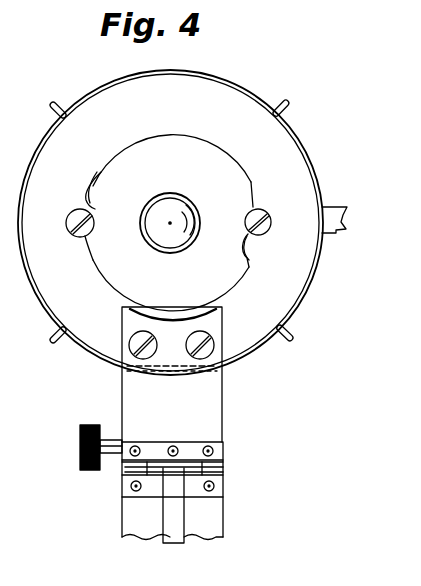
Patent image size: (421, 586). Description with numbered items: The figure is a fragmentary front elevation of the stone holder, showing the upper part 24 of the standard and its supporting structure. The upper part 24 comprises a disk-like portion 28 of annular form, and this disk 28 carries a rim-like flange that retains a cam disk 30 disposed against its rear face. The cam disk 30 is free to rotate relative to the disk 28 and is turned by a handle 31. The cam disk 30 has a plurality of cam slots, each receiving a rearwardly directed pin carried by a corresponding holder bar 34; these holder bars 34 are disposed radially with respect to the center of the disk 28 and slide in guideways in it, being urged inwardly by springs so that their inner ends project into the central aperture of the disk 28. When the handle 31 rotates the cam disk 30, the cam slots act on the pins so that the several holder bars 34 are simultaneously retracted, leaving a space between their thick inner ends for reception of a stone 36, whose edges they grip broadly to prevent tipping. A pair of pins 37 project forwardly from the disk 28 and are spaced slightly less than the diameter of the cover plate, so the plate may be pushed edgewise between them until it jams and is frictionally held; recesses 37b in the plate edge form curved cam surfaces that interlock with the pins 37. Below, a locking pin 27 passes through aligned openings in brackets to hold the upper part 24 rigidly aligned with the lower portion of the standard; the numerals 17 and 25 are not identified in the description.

The strip 17 is at (178, 516).
The upper part of the standard 24 is at (215, 403).
The plate 25 is at (216, 465).
The locking pin 27 is at (110, 439).
The disk-like portion 28 is at (299, 284).
The cam disk 30 is at (164, 205).
The handle 31 is at (333, 207).
The holder bar 34 is at (291, 106).
The stone 36 is at (118, 277).
The pins 37 is at (72, 212).
The recesses 37b is at (90, 199).